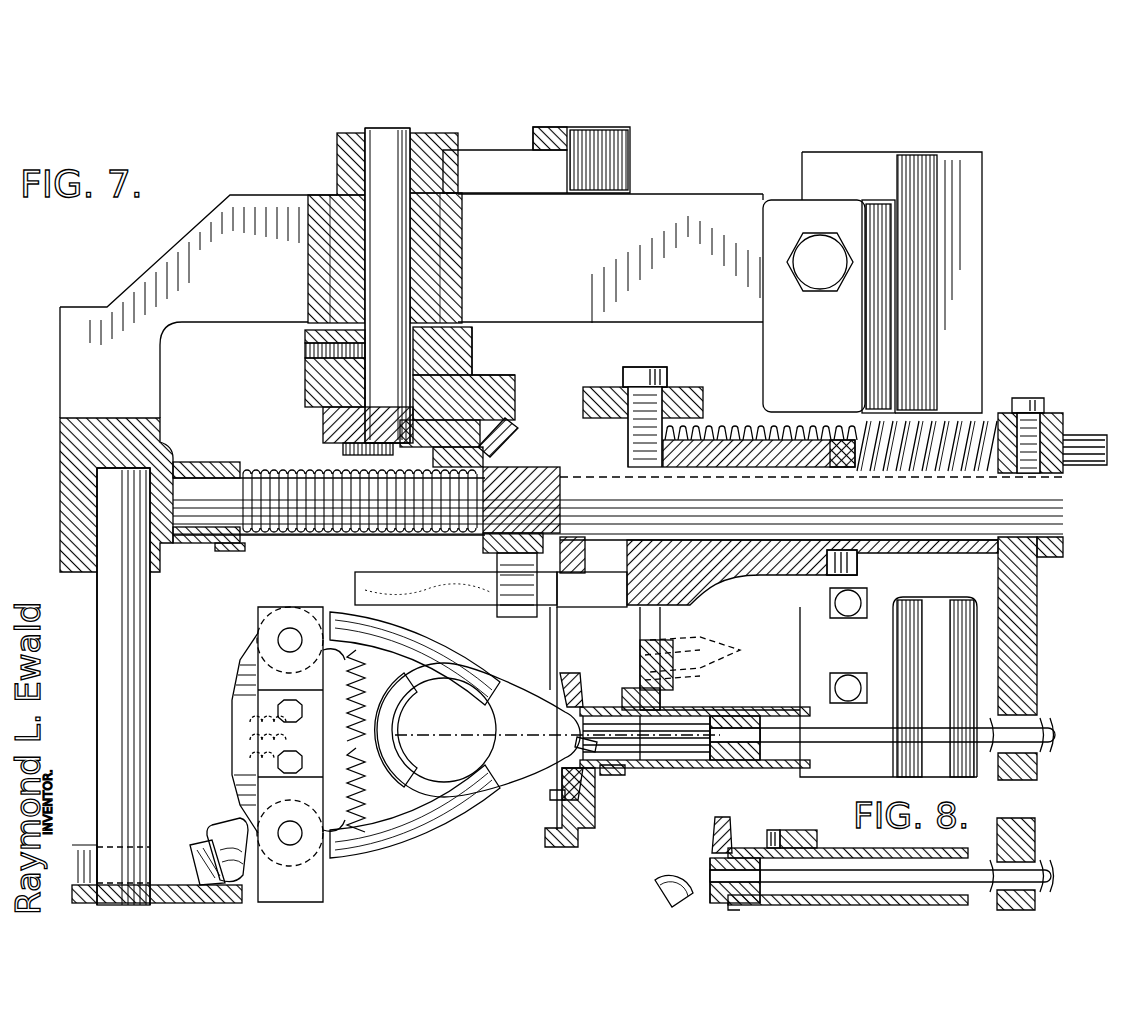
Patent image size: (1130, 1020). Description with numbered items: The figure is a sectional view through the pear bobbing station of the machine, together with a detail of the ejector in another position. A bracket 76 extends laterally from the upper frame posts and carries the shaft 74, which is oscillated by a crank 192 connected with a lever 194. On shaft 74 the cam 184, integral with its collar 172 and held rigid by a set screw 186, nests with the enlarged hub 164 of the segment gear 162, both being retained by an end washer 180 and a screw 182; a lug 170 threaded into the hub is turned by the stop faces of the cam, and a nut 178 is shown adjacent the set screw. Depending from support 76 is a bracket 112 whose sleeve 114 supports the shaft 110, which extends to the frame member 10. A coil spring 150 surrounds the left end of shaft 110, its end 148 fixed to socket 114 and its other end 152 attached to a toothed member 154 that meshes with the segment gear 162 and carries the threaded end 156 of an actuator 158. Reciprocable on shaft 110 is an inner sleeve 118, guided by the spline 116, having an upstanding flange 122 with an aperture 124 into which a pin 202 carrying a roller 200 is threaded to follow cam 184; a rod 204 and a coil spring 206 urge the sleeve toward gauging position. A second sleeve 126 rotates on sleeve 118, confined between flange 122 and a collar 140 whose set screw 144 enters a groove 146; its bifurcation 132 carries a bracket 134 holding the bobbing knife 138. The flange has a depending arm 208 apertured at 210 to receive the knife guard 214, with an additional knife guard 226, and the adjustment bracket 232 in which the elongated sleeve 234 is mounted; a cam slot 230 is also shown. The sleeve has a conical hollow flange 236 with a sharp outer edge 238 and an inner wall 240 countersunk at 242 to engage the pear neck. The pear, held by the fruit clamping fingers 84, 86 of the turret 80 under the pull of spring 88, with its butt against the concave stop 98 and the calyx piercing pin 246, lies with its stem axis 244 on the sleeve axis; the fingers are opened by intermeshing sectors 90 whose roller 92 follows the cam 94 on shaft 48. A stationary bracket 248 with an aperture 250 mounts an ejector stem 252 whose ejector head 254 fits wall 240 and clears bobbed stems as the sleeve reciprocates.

In FIG. 7, the frame member 10 is at (970, 237).
In FIG. 7, the shaft 48 is at (140, 613).
In FIG. 7, the shaft 74 is at (412, 245).
In FIG. 7, the bracket 76 is at (207, 225).
In FIG. 7, the turret 80 is at (165, 870).
In FIG. 7, the fruit clamping finger 84 is at (482, 672).
In FIG. 7, the fruit clamping finger 86 is at (462, 820).
In FIG. 7, the spring 88 is at (375, 855).
In FIG. 7, the sector 90 is at (238, 680).
In FIG. 7, the roller 92 is at (215, 825).
In FIG. 7, the cam 94 is at (190, 845).
In FIG. 7, the concave stop 98 is at (387, 690).
In FIG. 7, the shaft 110 is at (188, 482).
In FIG. 7, the depending bracket 112 is at (93, 430).
In FIG. 7, the sleeve 114 is at (225, 460).
In FIG. 7, the spline 116 is at (762, 478).
In FIG. 7, the sleeve 118 is at (775, 575).
In FIG. 7, the upstanding flange 122 is at (630, 442).
In FIG. 7, the aperture 124 is at (630, 460).
In FIG. 7, the second sleeve 126 is at (770, 440).
In FIG. 7, the bifurcation 132 is at (370, 580).
In FIG. 7, the bracket 134 is at (582, 565).
In FIG. 7, the bobbing knife 138 is at (555, 658).
In FIG. 7, the collar 140 is at (865, 415).
In FIG. 7, the set screw 144 is at (858, 570).
In FIG. 7, the groove 146 is at (840, 455).
In FIG. 7, the spring end 148 is at (222, 551).
In FIG. 7, the coil spring 150 is at (300, 540).
In FIG. 7, the spring end 152 is at (515, 456).
In FIG. 7, the toothed member 154 is at (480, 548).
In FIG. 7, the threaded end 156 is at (515, 527).
In FIG. 7, the actuator 158 is at (512, 612).
In FIG. 7, the segment gear 162 is at (502, 433).
In FIG. 7, the hub 164 is at (470, 370).
In FIG. 7, the lug 170 is at (330, 415).
In FIG. 7, the collar 172 is at (457, 343).
In FIG. 7, the nut 178 is at (325, 395).
In FIG. 7, the end washer 180 is at (345, 450).
In FIG. 7, the screw 182 is at (487, 470).
In FIG. 7, the cam 184 is at (490, 400).
In FIG. 7, the set screw 186 is at (305, 348).
In FIG. 7, the crank 192 is at (340, 165).
In FIG. 7, the lever 194 is at (625, 135).
In FIG. 7, the roller 200 is at (698, 388).
In FIG. 7, the pin 202 is at (658, 368).
In FIG. 7, the rod 204 is at (963, 417).
In FIG. 7, the coil spring 206 is at (925, 422).
In FIG. 7, the downwardly extending arm 208 is at (642, 640).
In FIG. 7, the aperture 210 is at (703, 665).
In FIG. 7, the knife guard 214 is at (575, 840).
In FIG. 7, the additional knife guard 226 is at (625, 638).
In FIG. 7, the cam slot 230 is at (640, 670).
In FIG. 7, the adjustment bracket 232 is at (660, 692).
In FIG. 8, the adjustment bracket 232 is at (805, 830).
In FIG. 7, the elongated sleeve 234 is at (760, 762).
In FIG. 8, the elongated sleeve 234 is at (970, 850).
In FIG. 7, the hollow flange 236 is at (572, 672).
In FIG. 7, the outer peripheral edge 238 is at (552, 795).
In FIG. 7, the inner wall 240 is at (690, 765).
In FIG. 7, the countersink 242 is at (560, 775).
In FIG. 7, the stem axis 244 is at (510, 742).
In FIG. 7, the calyx piercing pin 246 is at (420, 735).
In FIG. 8, the calyx piercing pin 246 is at (675, 870).
In FIG. 7, the stationary bracket 248 is at (1032, 648).
In FIG. 8, the stationary bracket 248 is at (1025, 830).
In FIG. 7, the aperture 250 is at (1022, 722).
In FIG. 7, the ejector stem 252 is at (1050, 732).
In FIG. 8, the ejector stem 252 is at (1050, 877).
In FIG. 7, the ejector head 254 is at (752, 710).
In FIG. 8, the ejector head 254 is at (715, 850).